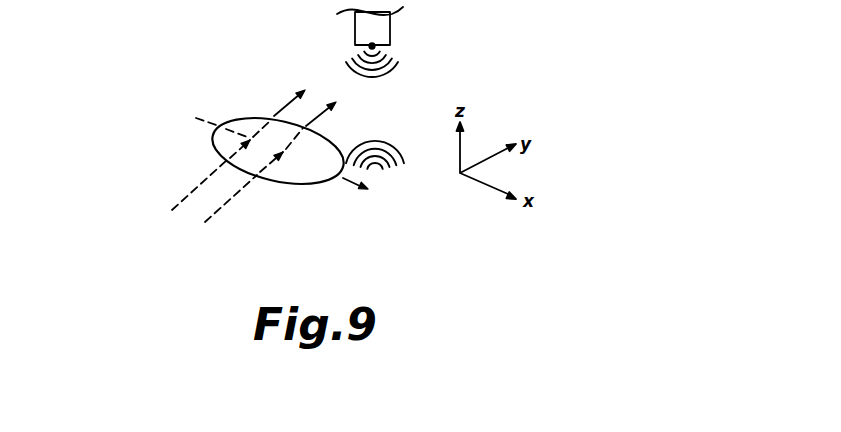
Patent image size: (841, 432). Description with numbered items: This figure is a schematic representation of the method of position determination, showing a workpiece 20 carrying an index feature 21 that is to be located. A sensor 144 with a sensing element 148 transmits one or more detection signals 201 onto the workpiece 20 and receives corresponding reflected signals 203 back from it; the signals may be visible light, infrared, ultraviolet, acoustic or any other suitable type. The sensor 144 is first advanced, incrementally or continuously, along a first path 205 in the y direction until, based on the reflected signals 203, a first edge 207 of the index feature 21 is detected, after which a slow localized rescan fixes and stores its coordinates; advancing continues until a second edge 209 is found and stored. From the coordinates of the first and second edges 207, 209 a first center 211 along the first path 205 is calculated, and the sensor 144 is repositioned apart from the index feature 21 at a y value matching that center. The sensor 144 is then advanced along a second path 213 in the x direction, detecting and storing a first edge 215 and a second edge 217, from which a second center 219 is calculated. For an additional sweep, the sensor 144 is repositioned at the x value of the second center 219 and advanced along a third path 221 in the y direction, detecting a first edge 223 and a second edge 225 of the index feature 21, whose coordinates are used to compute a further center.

The workpiece 20 is at (58, 56).
The index feature 21 is at (305, 183).
The sensor 144 is at (355, 22).
The sensing element 148 is at (375, 45).
The detection signal 201 is at (420, 62).
The reflected signal 203 is at (398, 180).
The first path 205 is at (180, 200).
The first edge 207 is at (225, 160).
The second edge 209 is at (273, 117).
The first center 211 is at (250, 137).
The second path 213 is at (190, 106).
The first edge along second path 215 is at (217, 128).
The second edge along second path 217 is at (340, 172).
The second center 219 is at (331, 140).
The third path 221 is at (219, 226).
The first edge along third path 223 is at (257, 176).
The second edge along third path 225 is at (303, 127).